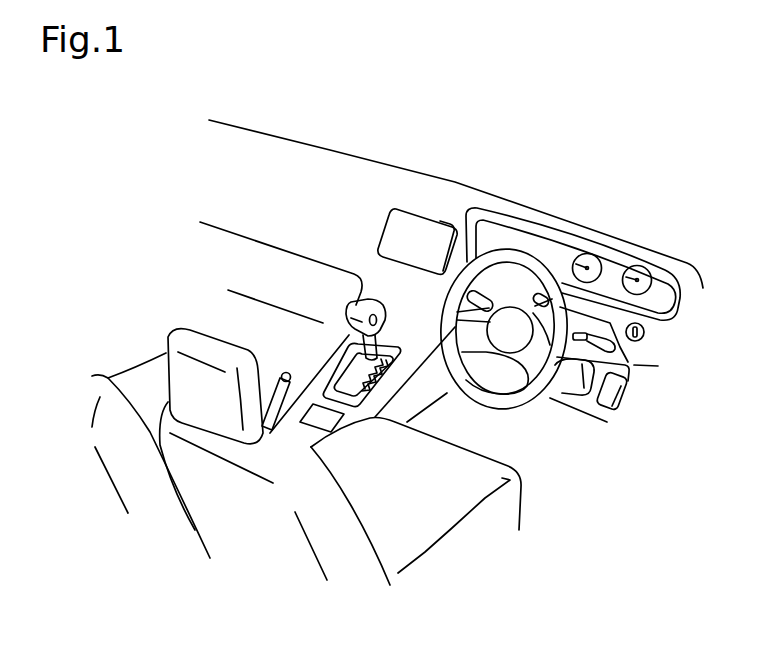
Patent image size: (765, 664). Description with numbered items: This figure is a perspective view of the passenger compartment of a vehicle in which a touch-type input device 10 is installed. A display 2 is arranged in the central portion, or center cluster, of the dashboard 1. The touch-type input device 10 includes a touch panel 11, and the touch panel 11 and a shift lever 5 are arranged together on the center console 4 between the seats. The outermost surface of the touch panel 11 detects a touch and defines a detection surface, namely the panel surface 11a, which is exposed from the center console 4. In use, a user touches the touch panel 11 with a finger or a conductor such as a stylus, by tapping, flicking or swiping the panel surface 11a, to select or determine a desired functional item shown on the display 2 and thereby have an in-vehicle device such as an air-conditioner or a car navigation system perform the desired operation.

The dashboard 1 is at (371, 163).
The display 2 is at (421, 224).
The center console 4 is at (328, 358).
The shift lever 5 is at (388, 330).
The touch-type input device 10 is at (310, 420).
The touch panel 11 is at (363, 438).
The panel surface 11a is at (336, 420).